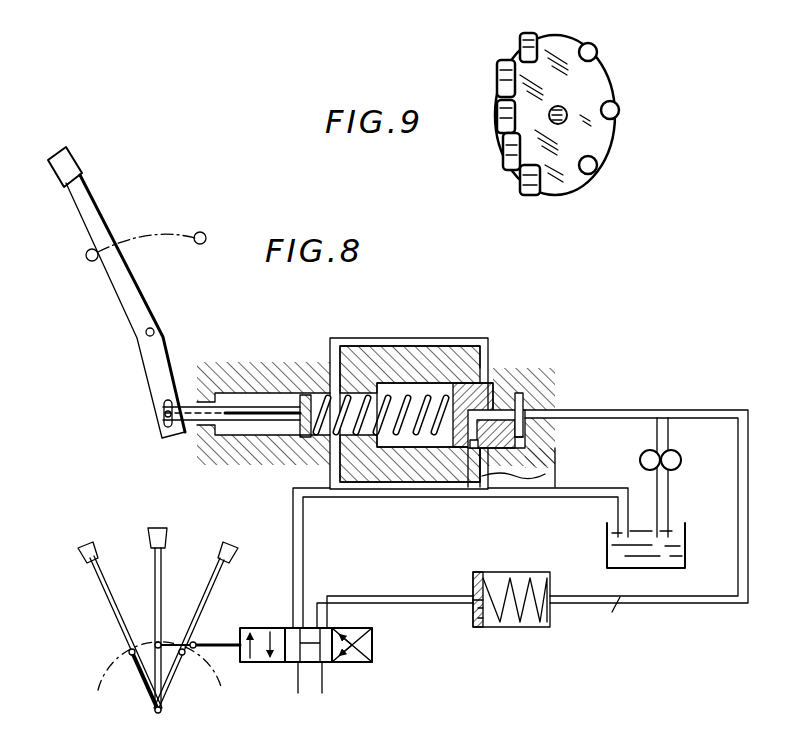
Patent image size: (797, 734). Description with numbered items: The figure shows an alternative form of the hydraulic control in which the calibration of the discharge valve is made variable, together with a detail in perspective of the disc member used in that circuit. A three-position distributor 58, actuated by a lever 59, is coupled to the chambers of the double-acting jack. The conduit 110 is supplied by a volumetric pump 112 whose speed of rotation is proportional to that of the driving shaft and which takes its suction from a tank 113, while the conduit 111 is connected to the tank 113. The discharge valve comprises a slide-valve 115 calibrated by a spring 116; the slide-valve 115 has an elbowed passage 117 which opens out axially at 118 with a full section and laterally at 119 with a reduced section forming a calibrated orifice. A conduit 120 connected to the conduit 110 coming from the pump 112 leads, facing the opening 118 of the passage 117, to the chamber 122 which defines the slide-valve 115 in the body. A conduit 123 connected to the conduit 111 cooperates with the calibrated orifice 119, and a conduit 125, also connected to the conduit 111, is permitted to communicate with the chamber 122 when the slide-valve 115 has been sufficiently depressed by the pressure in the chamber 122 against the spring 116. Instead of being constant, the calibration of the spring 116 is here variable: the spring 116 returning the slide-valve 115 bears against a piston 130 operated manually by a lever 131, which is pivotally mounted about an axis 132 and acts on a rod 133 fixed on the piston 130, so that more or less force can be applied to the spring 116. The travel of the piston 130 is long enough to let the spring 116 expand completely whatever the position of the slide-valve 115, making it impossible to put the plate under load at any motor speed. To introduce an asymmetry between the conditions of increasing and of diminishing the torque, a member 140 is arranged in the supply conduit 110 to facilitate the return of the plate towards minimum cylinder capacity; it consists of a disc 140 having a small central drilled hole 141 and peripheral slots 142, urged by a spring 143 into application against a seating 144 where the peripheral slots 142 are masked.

In FIG. 8, the distributor 58 is at (375, 645).
In FIG. 8, the lever 59 is at (110, 610).
In FIG. 8, the conduit 110 is at (598, 618).
In FIG. 8, the conduit 111 is at (293, 605).
In FIG. 8, the volumetric pump 112 is at (672, 460).
In FIG. 8, the tank 113 is at (685, 540).
In FIG. 8, the slide-valve 115 is at (468, 390).
In FIG. 8, the spring 116 is at (408, 400).
In FIG. 8, the elbowed passage 117 is at (497, 413).
In FIG. 8, the axial opening 118 is at (520, 394).
In FIG. 8, the calibrated orifice 119 is at (472, 446).
In FIG. 8, the conduit 120 is at (605, 416).
In FIG. 8, the chamber 122 is at (520, 437).
In FIG. 8, the conduit 123 is at (535, 485).
In FIG. 8, the conduit 125 is at (377, 340).
In FIG. 8, the piston 130 is at (304, 398).
In FIG. 8, the lever 131 is at (140, 300).
In FIG. 8, the axis 132 is at (158, 332).
In FIG. 8, the rod 133 is at (277, 408).
In FIG. 9, the member 140 is at (593, 140).
In FIG. 8, the member 140 is at (474, 589).
In FIG. 9, the central drilled hole 141 is at (565, 118).
In FIG. 8, the central drilled hole 141 is at (476, 600).
In FIG. 9, the peripheral slots 142 is at (494, 118).
In FIG. 8, the peripheral slots 142 is at (478, 626).
In FIG. 8, the spring 143 is at (530, 596).
In FIG. 8, the seating 144 is at (486, 616).